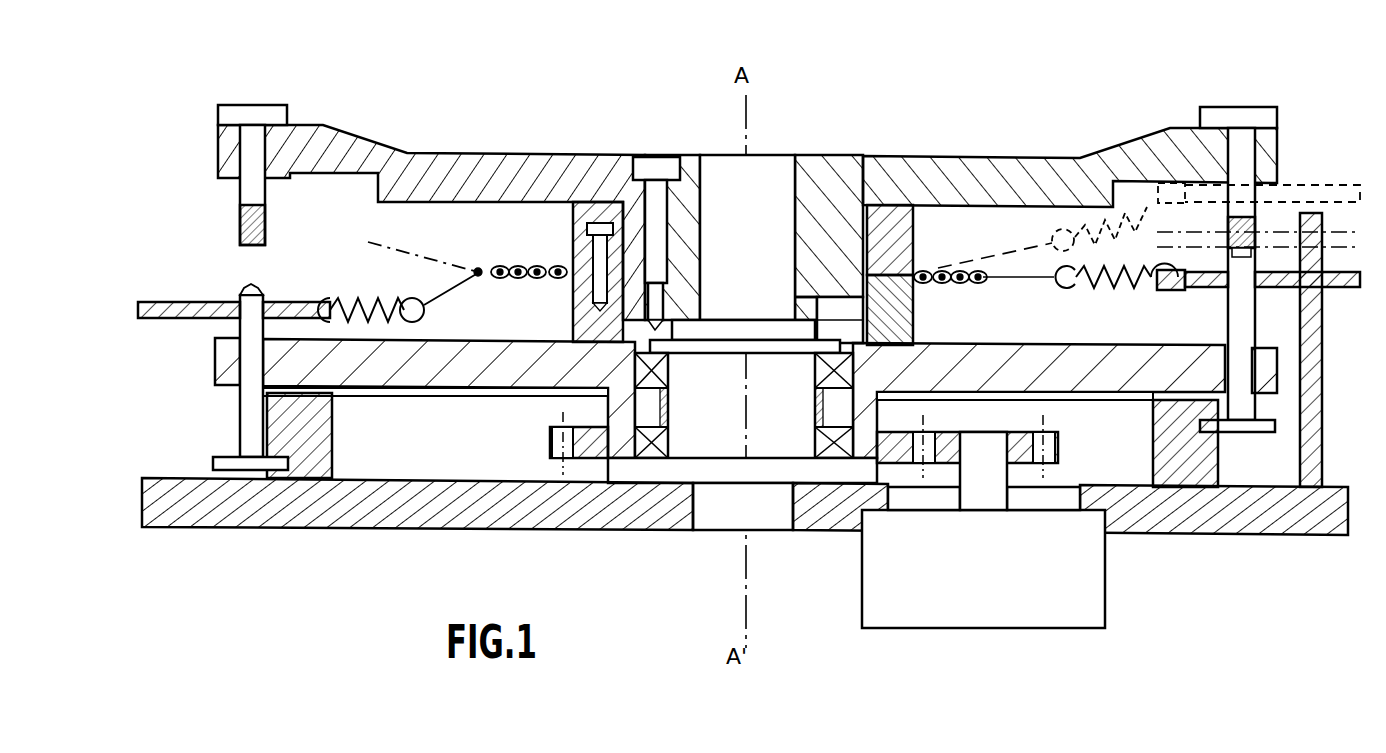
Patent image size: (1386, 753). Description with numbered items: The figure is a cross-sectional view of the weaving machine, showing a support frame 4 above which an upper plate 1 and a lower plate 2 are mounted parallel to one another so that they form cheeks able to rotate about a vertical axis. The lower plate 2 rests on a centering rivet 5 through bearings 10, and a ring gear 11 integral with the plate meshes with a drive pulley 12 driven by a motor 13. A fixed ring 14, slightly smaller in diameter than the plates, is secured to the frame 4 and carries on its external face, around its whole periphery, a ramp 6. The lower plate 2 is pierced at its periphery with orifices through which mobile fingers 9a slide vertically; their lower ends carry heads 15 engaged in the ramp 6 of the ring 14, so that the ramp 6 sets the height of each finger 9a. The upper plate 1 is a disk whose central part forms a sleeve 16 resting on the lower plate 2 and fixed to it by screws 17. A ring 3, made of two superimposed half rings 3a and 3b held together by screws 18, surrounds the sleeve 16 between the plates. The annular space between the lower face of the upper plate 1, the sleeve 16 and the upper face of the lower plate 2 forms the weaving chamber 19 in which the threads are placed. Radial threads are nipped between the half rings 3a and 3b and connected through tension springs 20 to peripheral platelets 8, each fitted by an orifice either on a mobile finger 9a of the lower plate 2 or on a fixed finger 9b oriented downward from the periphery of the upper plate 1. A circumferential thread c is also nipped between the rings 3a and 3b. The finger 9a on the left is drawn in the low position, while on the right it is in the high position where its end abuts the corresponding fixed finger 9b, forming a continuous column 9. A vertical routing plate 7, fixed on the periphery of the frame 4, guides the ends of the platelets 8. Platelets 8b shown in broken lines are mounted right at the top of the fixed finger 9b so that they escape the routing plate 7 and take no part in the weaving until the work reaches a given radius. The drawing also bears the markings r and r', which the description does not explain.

The upper plate 1 is at (578, 182).
The lower plate 2 is at (500, 368).
The ring 3 is at (848, 173).
The half ring 3a is at (868, 278).
The half ring 3b is at (893, 235).
The support frame 4 is at (542, 512).
The centering rivet 5 is at (727, 443).
The ramp 6 is at (293, 465).
The vertical routing plate 7 is at (1315, 362).
The peripheral platelets 8 is at (198, 305).
The platelets 8b is at (1335, 186).
The continuous column 9 is at (1236, 318).
The mobile fingers 9a is at (243, 408).
The fixed fingers 9b is at (250, 152).
The bearings 10 is at (665, 370).
The ring gear 11 is at (594, 458).
The drive pulley 12 is at (1022, 458).
The motor 13 is at (1057, 617).
The fixed ring 14 is at (318, 452).
The heads 15 is at (220, 468).
The sleeve 16 is at (813, 233).
The screws 17 is at (657, 190).
The screws 18 is at (600, 247).
The weaving chamber 19 is at (983, 233).
The tension springs 20 is at (366, 297).
The radial line r is at (455, 302).
The radial line second position r' is at (423, 184).
The circumferential thread c is at (500, 265).